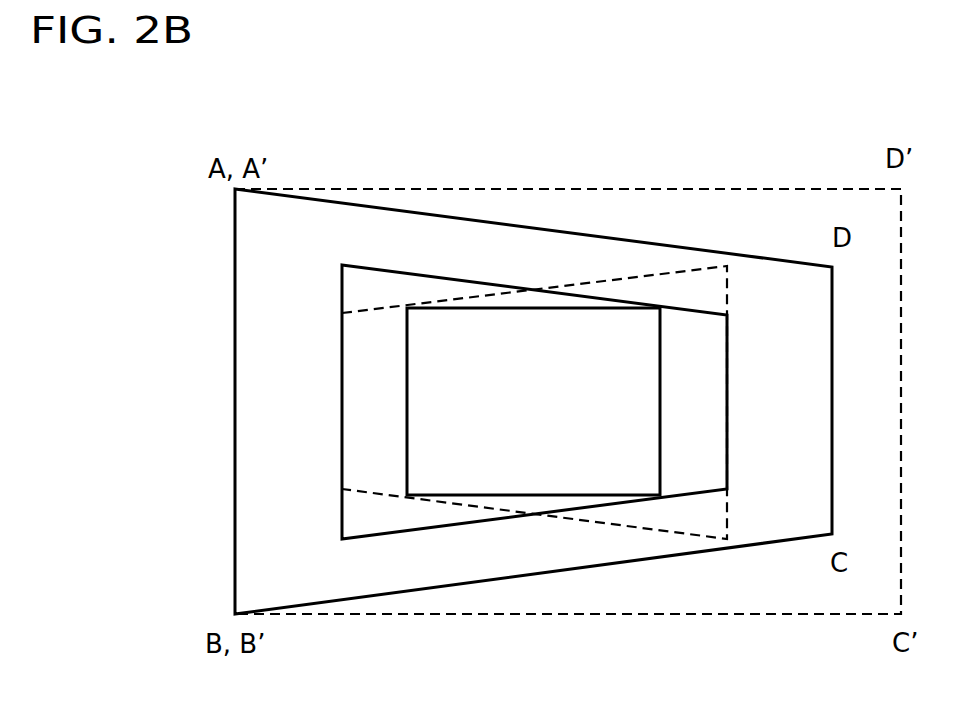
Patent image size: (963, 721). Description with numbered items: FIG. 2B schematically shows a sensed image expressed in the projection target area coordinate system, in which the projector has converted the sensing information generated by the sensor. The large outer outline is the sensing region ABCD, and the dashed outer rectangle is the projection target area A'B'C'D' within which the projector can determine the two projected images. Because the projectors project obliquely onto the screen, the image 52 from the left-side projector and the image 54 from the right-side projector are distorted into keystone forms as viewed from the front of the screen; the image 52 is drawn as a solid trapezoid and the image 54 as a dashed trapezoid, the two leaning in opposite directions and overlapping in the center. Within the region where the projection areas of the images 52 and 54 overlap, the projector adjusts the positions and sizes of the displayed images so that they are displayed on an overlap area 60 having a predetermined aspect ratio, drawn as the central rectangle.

The image 52 is at (434, 275).
The image 54 is at (634, 276).
The overlap area 60 is at (554, 307).